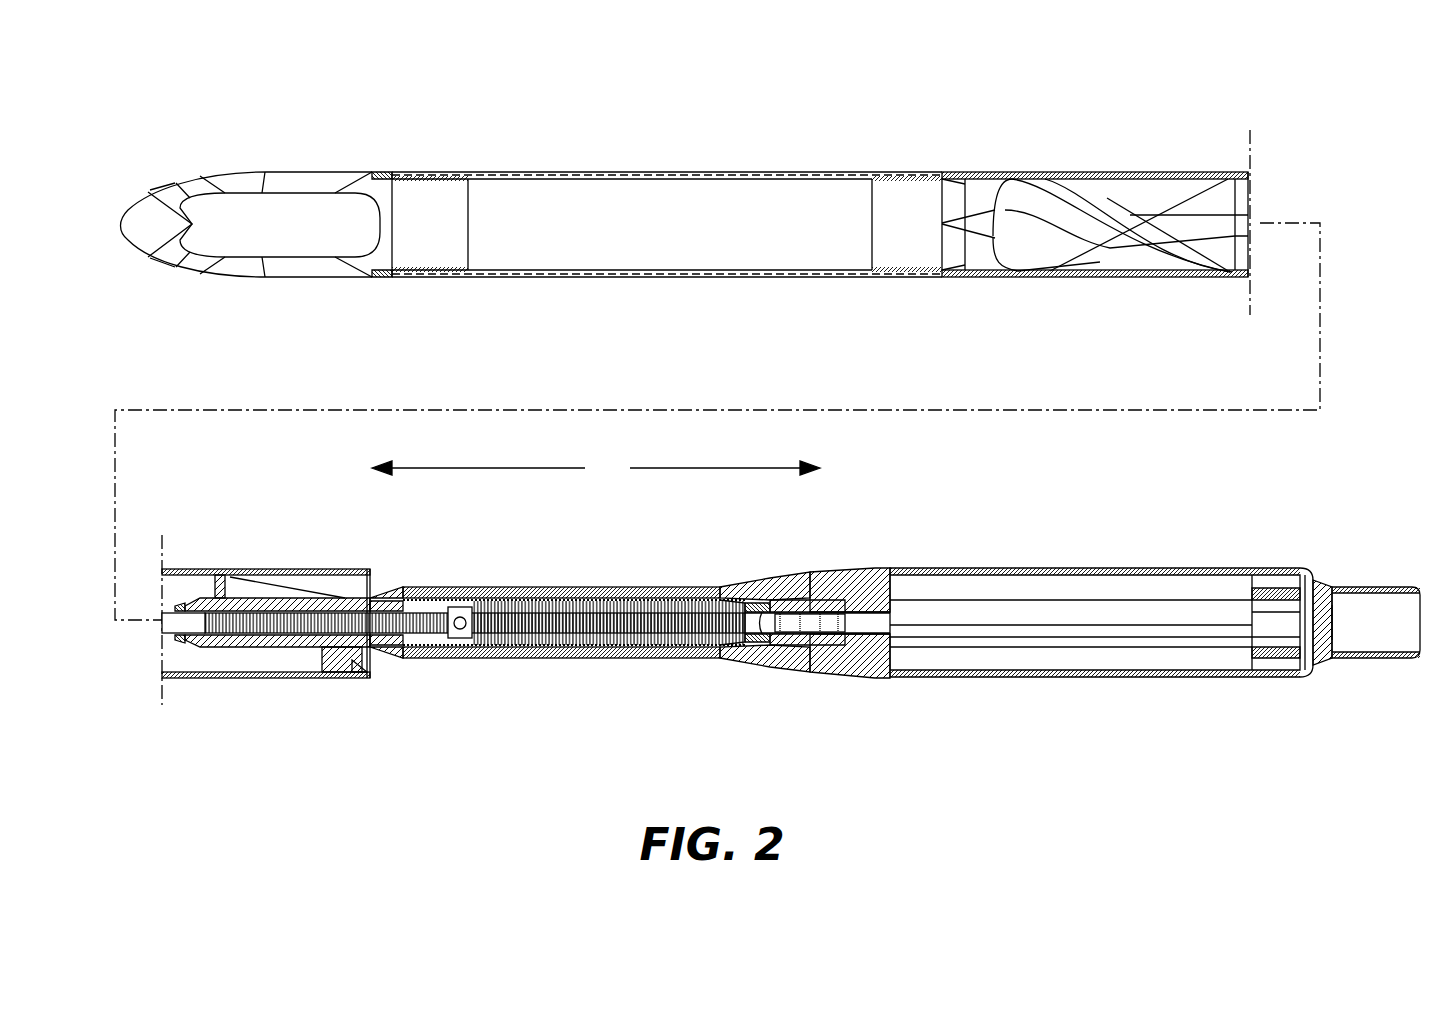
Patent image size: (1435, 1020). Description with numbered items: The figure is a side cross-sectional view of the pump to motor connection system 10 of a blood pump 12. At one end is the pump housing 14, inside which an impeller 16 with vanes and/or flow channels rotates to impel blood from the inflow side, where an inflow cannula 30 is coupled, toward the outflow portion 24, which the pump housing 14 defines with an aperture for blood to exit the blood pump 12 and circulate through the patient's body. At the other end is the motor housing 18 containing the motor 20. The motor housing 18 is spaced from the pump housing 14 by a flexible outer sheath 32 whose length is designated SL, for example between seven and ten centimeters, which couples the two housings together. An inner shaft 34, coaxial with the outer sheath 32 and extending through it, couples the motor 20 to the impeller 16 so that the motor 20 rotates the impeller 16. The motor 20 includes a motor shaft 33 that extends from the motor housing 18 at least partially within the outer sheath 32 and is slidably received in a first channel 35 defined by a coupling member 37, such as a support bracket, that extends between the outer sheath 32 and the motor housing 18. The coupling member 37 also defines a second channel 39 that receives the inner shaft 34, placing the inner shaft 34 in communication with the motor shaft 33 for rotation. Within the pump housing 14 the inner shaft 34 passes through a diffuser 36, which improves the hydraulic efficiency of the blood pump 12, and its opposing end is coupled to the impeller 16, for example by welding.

The connection system 10 is at (466, 688).
The blood pump 12 is at (960, 130).
The pump housing 14 is at (1128, 170).
The impeller 16 is at (1068, 195).
The motor housing 18 is at (830, 665).
The motor 20 is at (972, 620).
The outflow portion 24 is at (370, 662).
The inflow cannula 30 is at (558, 170).
The outer sheath 32 is at (643, 657).
The motor shaft 33 is at (833, 625).
The inner shaft 34 is at (531, 625).
The first channel 35 is at (742, 606).
The diffuser 36 is at (215, 648).
The coupling member 37 is at (802, 606).
The second channel 39 is at (741, 632).